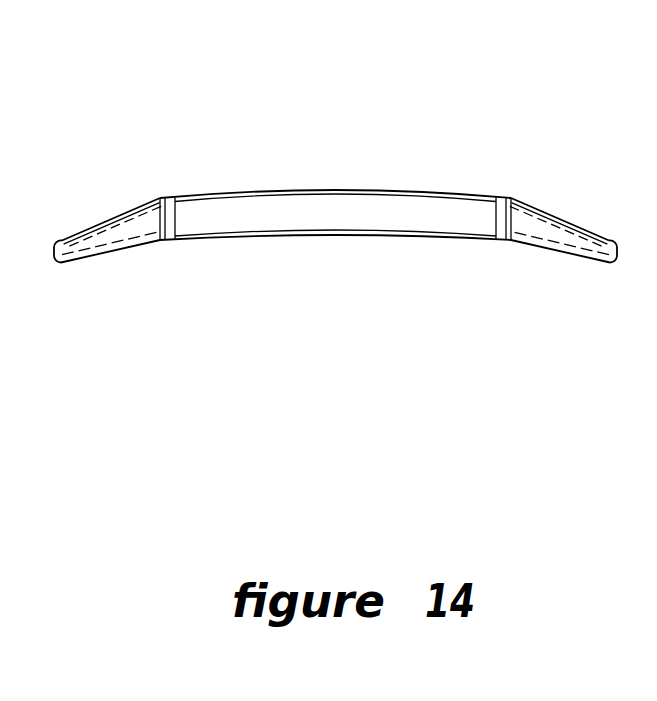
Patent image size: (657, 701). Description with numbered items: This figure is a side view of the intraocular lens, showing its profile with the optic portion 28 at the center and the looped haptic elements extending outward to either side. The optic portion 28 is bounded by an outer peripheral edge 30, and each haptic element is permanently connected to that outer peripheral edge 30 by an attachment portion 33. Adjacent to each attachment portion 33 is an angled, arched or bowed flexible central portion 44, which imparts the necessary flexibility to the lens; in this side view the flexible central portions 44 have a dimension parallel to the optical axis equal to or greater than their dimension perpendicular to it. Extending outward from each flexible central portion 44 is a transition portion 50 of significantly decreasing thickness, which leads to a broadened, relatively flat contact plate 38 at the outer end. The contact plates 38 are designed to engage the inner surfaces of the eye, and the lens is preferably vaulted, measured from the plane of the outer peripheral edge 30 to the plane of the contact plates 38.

The optic portion 28 is at (333, 190).
The outer peripheral edge 30 is at (338, 235).
The attachment portions 33 is at (160, 240).
The contact plate 38 is at (62, 238).
The flexible central portions 44 is at (103, 222).
The transition portions 50 is at (104, 244).